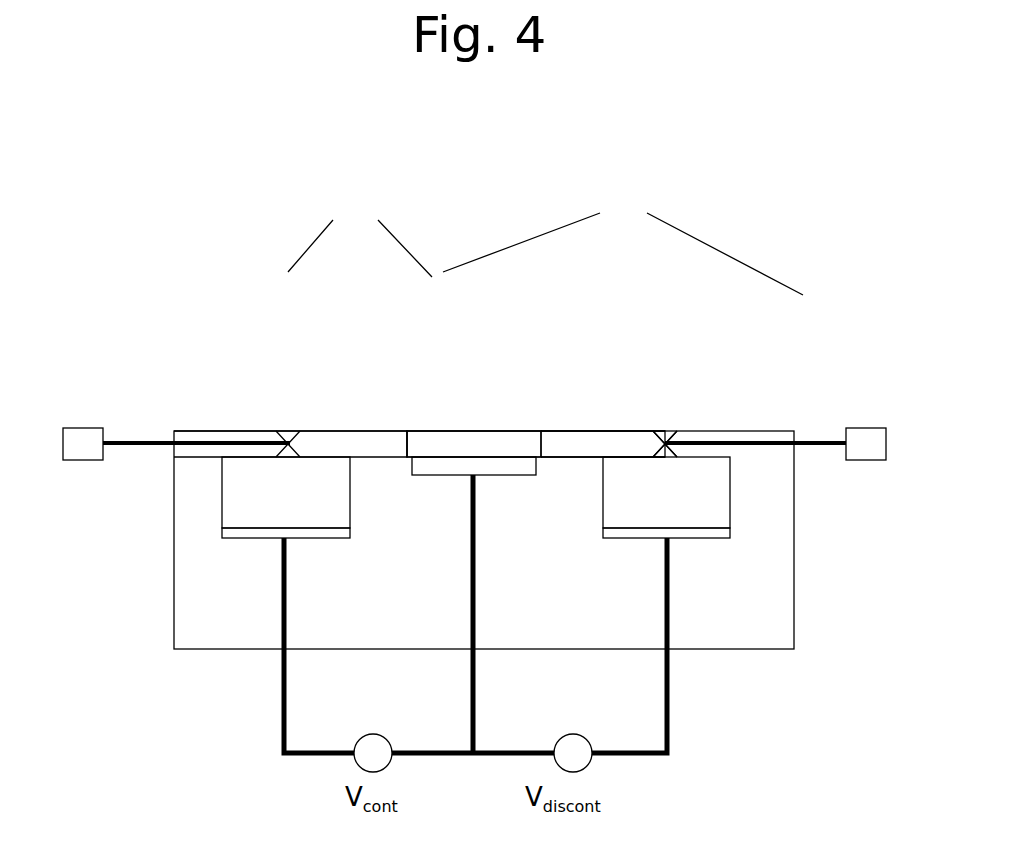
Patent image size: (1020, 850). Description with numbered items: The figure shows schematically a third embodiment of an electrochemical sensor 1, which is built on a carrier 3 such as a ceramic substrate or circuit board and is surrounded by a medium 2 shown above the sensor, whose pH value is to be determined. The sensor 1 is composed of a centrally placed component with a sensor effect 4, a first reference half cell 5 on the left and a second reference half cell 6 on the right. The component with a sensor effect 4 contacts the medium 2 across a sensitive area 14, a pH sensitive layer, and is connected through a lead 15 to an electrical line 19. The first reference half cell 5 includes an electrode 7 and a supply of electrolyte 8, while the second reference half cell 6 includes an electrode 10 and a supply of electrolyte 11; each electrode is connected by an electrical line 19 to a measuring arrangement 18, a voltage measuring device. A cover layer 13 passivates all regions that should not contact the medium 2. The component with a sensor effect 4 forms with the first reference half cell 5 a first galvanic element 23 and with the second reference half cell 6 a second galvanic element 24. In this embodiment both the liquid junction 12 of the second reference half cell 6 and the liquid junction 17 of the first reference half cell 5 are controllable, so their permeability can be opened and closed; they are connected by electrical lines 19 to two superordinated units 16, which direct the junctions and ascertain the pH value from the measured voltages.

The electrochemical sensor 1 is at (147, 213).
The medium 2 is at (500, 150).
The carrier 3 is at (205, 608).
The component with a sensor effect 4 is at (445, 401).
The first reference half cell 5 is at (286, 401).
The second reference half cell 6 is at (743, 410).
The electrode 7 is at (227, 538).
The supply of electrolyte 8 is at (233, 492).
The electrode 10 is at (730, 535).
The supply of electrolyte 11 is at (717, 493).
The liquid junction 12 is at (668, 430).
The cover layer 13 is at (348, 428).
The sensitive area 14 is at (505, 430).
The lead 15 is at (465, 428).
The superordinated unit 16 is at (474, 444).
The liquid junction 17 is at (292, 430).
The measuring arrangement 18 is at (473, 753).
The electrical line 19 is at (163, 443).
The first galvanic element 23 is at (360, 233).
The second galvanic element 24 is at (623, 242).